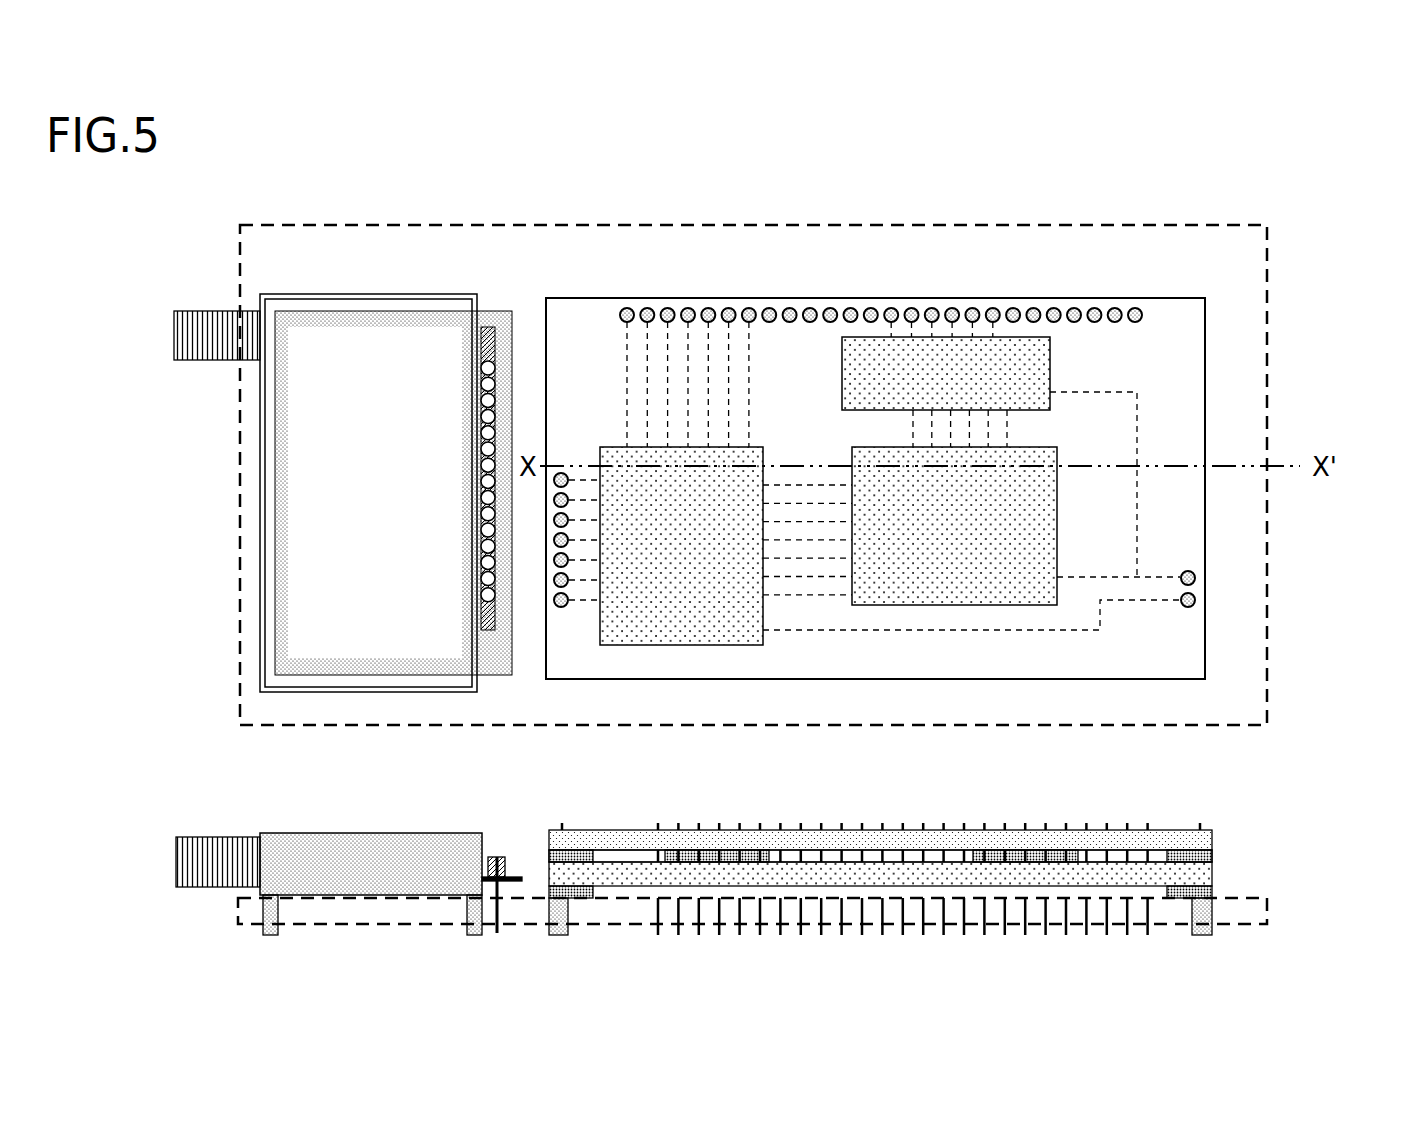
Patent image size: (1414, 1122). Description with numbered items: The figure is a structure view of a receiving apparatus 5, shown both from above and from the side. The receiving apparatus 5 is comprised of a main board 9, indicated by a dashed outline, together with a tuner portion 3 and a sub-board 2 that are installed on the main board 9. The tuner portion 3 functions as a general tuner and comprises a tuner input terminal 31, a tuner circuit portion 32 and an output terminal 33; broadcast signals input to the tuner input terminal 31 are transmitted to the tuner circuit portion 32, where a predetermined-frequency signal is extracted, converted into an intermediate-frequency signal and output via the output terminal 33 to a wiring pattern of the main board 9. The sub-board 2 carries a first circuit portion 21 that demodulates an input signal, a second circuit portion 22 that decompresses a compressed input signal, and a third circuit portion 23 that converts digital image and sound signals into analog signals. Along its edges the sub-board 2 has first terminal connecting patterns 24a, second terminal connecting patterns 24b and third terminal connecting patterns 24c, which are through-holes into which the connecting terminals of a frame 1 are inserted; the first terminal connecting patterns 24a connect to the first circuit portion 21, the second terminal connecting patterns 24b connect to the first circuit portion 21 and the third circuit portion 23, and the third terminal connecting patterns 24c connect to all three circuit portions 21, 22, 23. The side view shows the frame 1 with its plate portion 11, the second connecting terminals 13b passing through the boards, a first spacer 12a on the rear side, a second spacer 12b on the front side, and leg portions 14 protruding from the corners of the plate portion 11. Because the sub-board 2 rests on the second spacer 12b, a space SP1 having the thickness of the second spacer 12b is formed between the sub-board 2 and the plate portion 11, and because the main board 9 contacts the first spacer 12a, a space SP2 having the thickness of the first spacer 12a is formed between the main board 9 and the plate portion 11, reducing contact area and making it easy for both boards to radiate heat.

The receiving apparatus 5 is at (1325, 226).
The main board 9 is at (238, 552).
The tuner input terminal 31 is at (192, 310).
The tuner portion 3 is at (325, 296).
The tuner circuit portion 32 is at (398, 326).
The output terminal 33 is at (492, 366).
The sub-board 2 is at (822, 298).
The first terminal connecting patterns 24a is at (561, 609).
The second terminal connecting patterns 24b is at (934, 308).
The third terminal connecting patterns 24c is at (1196, 597).
The first circuit portion 21 is at (740, 447).
The second circuit portion 22 is at (1057, 500).
The third circuit portion 23 is at (1050, 348).
The frame 1 is at (548, 865).
The plate portion 11 is at (1190, 870).
The space SP1 is at (645, 855).
The space SP2 is at (603, 893).
The first spacer 12a is at (1200, 890).
The second spacer 12b is at (1200, 855).
The second connecting terminals 13b is at (905, 830).
The leg portions 14 is at (1205, 932).